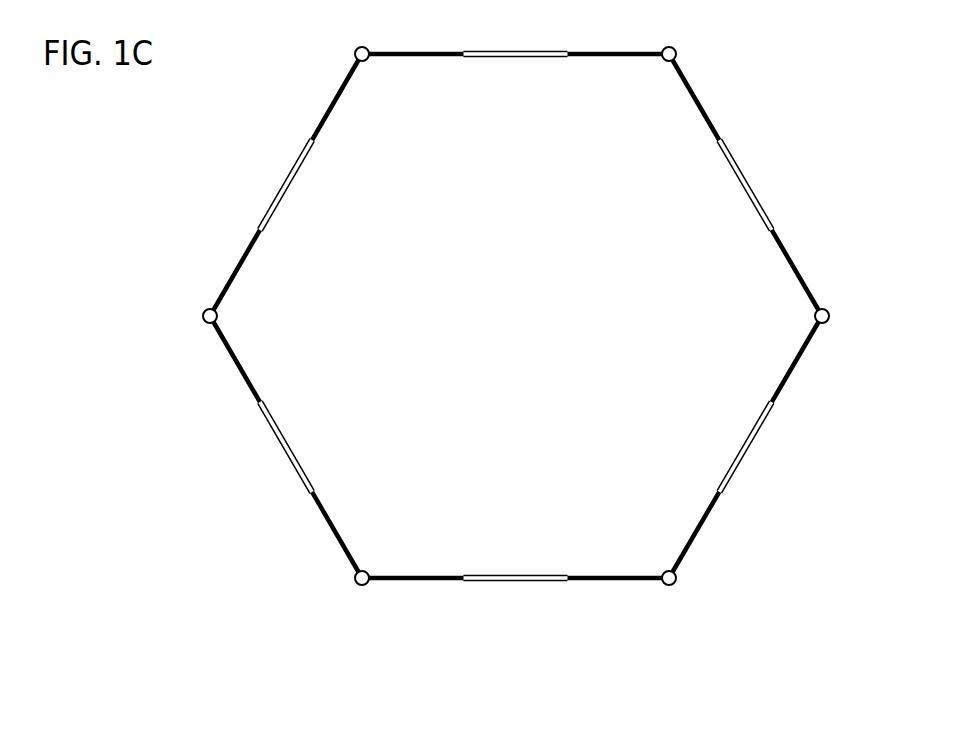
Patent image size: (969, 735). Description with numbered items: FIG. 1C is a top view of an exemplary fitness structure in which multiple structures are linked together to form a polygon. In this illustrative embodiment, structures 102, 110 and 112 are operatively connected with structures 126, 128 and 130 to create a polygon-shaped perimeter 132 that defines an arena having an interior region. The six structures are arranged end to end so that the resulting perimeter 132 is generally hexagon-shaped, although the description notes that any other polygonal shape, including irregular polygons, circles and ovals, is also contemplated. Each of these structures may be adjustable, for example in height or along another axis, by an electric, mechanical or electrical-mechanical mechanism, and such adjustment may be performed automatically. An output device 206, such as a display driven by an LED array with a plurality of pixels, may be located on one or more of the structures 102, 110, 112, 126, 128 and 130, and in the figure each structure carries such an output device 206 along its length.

The structure 102 is at (315, 113).
The structure 110 is at (598, 47).
The structure 112 is at (705, 100).
The structure 126 is at (235, 382).
The structure 128 is at (613, 587).
The structure 130 is at (788, 383).
The polygon-shaped perimeter 132 is at (550, 300).
The output device 206 is at (510, 60).